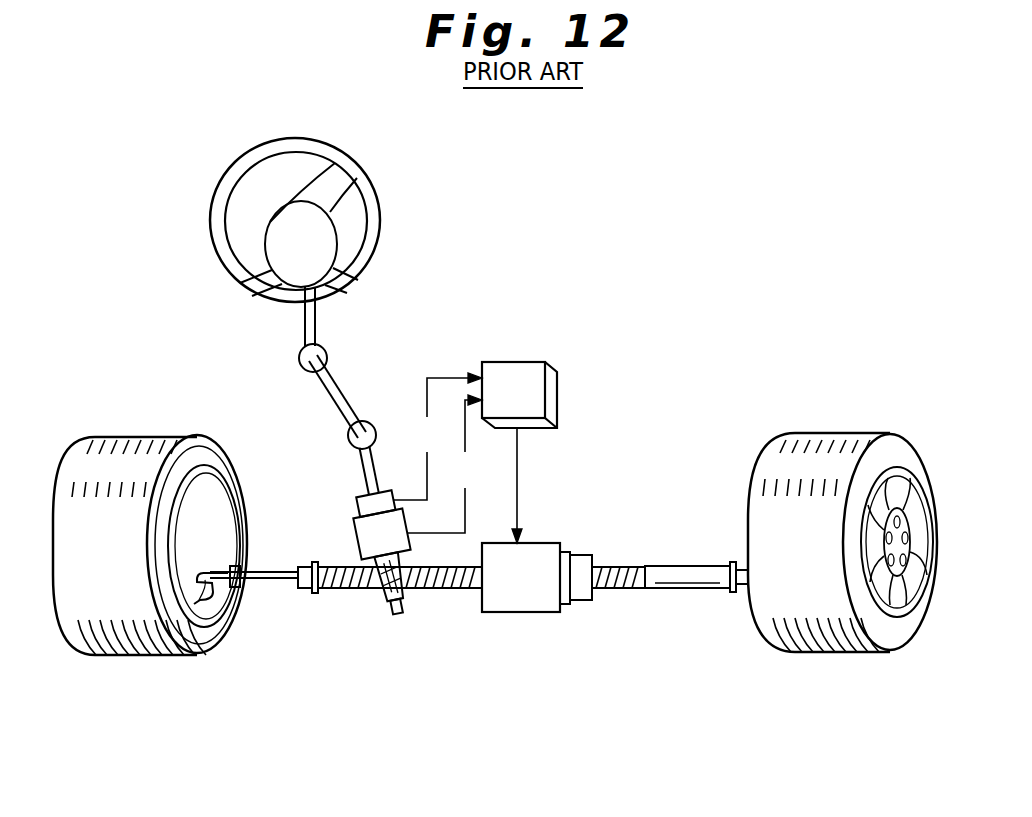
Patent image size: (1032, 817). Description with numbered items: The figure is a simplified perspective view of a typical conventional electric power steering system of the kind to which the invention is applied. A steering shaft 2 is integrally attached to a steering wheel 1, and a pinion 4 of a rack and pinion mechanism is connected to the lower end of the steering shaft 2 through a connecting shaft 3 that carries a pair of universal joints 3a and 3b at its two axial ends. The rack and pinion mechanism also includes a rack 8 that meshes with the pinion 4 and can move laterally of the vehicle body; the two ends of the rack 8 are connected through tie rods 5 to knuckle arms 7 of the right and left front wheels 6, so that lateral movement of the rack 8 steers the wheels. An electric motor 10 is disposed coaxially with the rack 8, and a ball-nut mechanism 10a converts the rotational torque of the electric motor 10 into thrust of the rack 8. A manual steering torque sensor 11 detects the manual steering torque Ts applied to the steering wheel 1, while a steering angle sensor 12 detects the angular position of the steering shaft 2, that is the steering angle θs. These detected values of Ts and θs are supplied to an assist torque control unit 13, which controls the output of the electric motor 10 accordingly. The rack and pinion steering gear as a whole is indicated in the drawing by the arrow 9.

The steering wheel 1 is at (380, 204).
The steering shaft 2 is at (305, 322).
The connecting shaft 3 is at (333, 400).
The universal joint 3a is at (327, 353).
The universal joint 3b is at (370, 423).
The pinion 4 is at (381, 598).
The tie rod 5 is at (280, 580).
The front wheel 6 is at (137, 437).
The knuckle arm 7 is at (214, 592).
The rack 8 is at (458, 590).
The rack and pinion steering gear 9 is at (424, 672).
The electric motor 10 is at (540, 613).
The ball-nut mechanism 10a is at (585, 600).
The manual steering torque sensor 11 is at (352, 540).
The steering angle sensor 12 is at (352, 500).
The assist torque control unit 13 is at (557, 401).